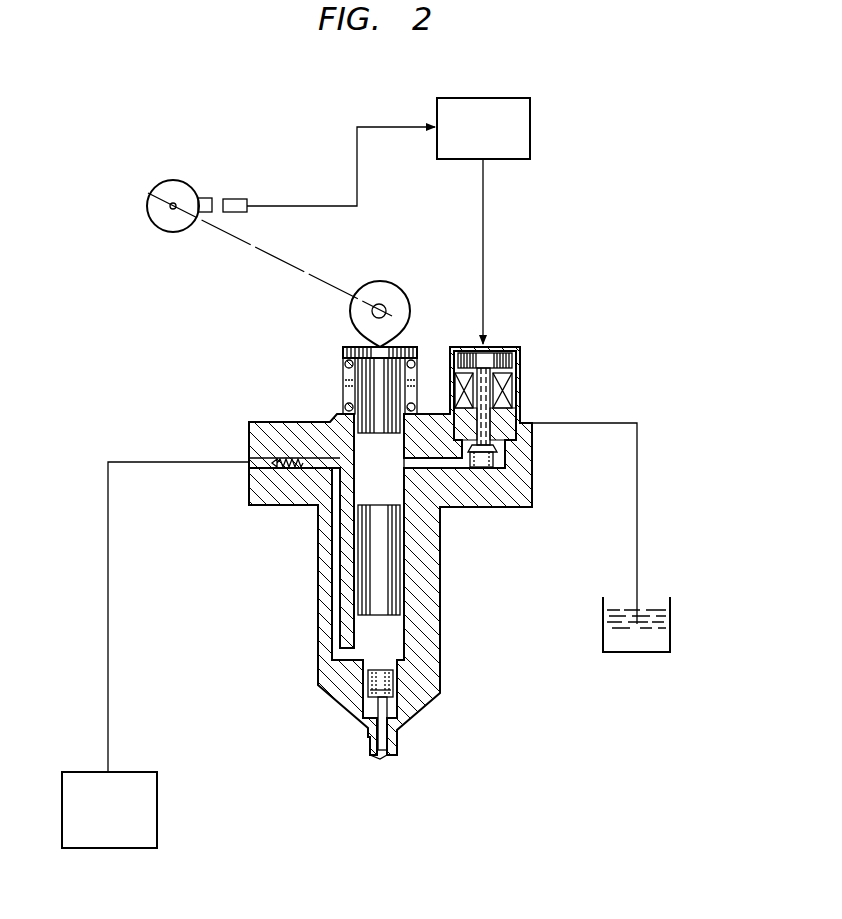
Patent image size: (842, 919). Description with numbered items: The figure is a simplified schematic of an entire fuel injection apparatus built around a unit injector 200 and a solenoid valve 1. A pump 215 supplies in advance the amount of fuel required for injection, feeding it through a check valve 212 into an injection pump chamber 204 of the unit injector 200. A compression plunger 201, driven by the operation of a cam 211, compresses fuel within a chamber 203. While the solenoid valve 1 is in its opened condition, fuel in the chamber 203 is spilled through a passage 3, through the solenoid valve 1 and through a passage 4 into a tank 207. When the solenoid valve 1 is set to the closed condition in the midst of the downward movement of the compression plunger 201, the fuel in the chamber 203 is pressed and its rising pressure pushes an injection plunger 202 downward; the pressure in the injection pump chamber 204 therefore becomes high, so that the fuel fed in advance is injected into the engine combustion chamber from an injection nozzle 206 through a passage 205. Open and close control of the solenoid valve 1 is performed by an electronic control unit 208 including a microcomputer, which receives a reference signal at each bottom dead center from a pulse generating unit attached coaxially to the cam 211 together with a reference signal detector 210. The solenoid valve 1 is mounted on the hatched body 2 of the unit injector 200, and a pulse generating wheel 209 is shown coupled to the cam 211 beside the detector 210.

The solenoid valve 1 is at (533, 404).
The injector housing 2 is at (525, 450).
The passage 3 is at (461, 472).
The passage 4 is at (640, 539).
The unit injector 200 is at (233, 428).
The compression plunger 201 is at (363, 346).
The injection plunger 202 is at (398, 561).
The chamber 203 is at (337, 498).
The injection pump chamber 204 is at (393, 652).
The passage 205 is at (366, 686).
The injection nozzle 206 is at (383, 762).
The tank 207 is at (672, 621).
The electronic control unit 208 is at (522, 98).
The cam shaft / rotation wheel 209 is at (175, 187).
The reference signal detector 210 is at (237, 199).
The cam 211 is at (385, 283).
The check valve 212 is at (270, 464).
The pump 215 is at (157, 778).